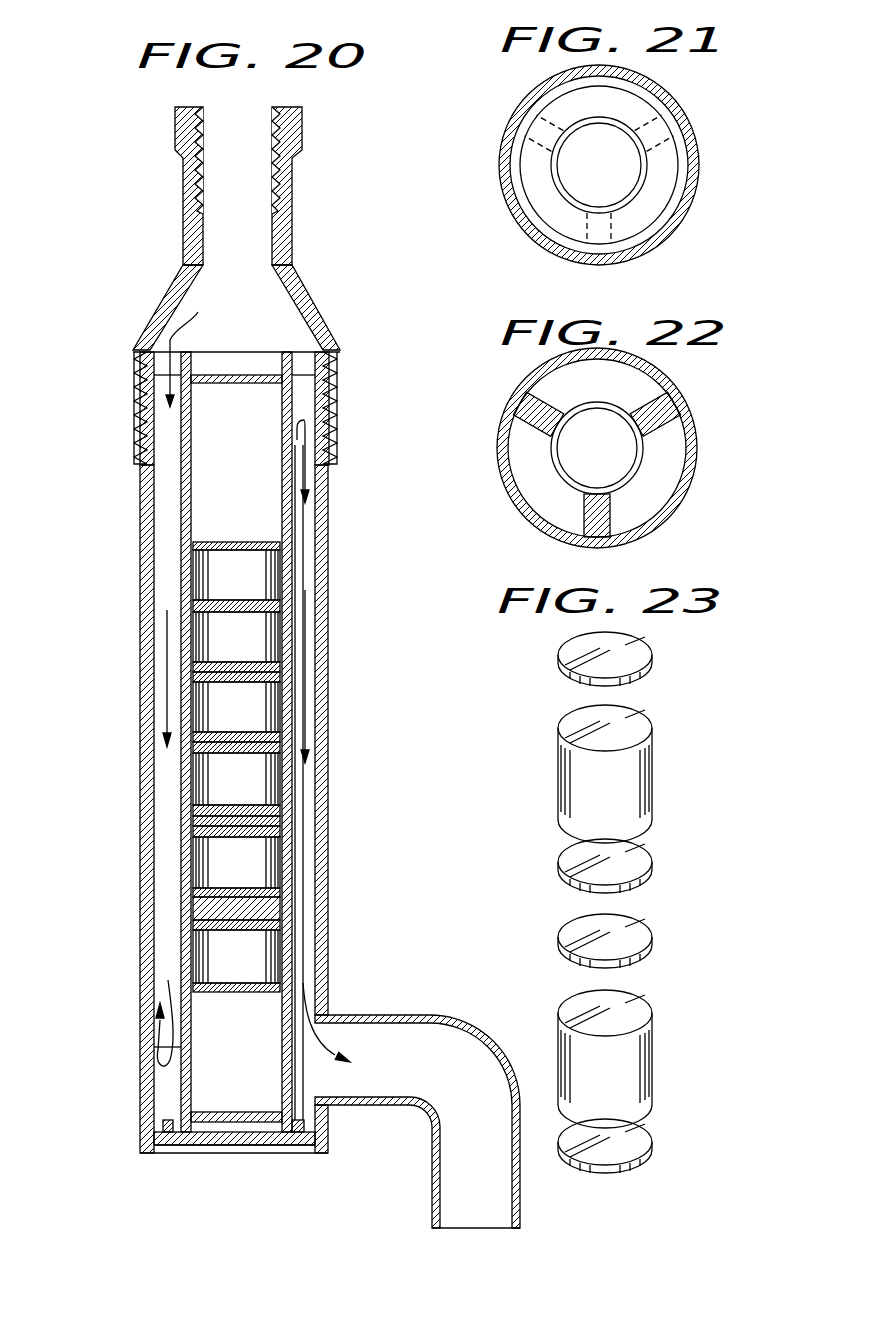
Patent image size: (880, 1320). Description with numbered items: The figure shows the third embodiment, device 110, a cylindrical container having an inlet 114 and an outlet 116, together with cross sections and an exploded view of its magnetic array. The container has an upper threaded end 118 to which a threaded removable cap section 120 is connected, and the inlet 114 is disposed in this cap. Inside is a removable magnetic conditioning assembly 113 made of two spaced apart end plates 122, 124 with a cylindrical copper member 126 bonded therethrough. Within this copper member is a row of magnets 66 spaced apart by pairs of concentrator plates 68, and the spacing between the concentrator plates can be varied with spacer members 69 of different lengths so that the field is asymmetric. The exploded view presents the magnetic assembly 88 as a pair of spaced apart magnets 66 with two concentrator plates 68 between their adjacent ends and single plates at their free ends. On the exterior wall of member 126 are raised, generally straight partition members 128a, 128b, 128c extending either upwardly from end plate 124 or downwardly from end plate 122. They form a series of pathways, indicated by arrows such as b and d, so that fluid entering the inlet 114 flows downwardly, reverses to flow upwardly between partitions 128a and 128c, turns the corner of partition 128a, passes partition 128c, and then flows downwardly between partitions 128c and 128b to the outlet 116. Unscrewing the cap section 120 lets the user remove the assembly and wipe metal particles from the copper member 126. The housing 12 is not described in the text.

In FIG. 21, the housing 12 is at (692, 188).
In FIG. 22, the housing 12 is at (670, 393).
In FIG. 20, the magnet 66 is at (202, 775).
In FIG. 23, the magnet 66 is at (633, 767).
In FIG. 20, the concentrator plate 68 is at (190, 548).
In FIG. 23, the concentrator plate 68 is at (628, 662).
In FIG. 20, the spacer member 69 is at (277, 907).
In FIG. 23, the magnetic conditioning assembly 88 is at (611, 906).
In FIG. 20, the device 110 is at (346, 776).
In FIG. 20, the magnetic conditioning assembly 113 is at (182, 634).
In FIG. 20, the inlet 114 is at (253, 233).
In FIG. 20, the outlet 116 is at (435, 1047).
In FIG. 20, the upper threaded end 118 is at (157, 407).
In FIG. 20, the threaded removable cap section 120 is at (170, 300).
In FIG. 21, the end plate 122 is at (537, 192).
In FIG. 20, the end plate 124 is at (165, 1128).
In FIG. 20, the cylindrical copper member 126 is at (183, 493).
In FIG. 22, the cylindrical copper member 126 is at (552, 463).
In FIG. 22, the partition member 128a is at (600, 512).
In FIG. 20, the partition member 128b is at (305, 858).
In FIG. 22, the partition member 128b is at (657, 413).
In FIG. 20, the partition member 128c is at (160, 963).
In FIG. 22, the partition member 128c is at (533, 403).
In FIG. 20, the pathway arrow b is at (188, 327).
In FIG. 20, the pathway arrow d is at (307, 467).